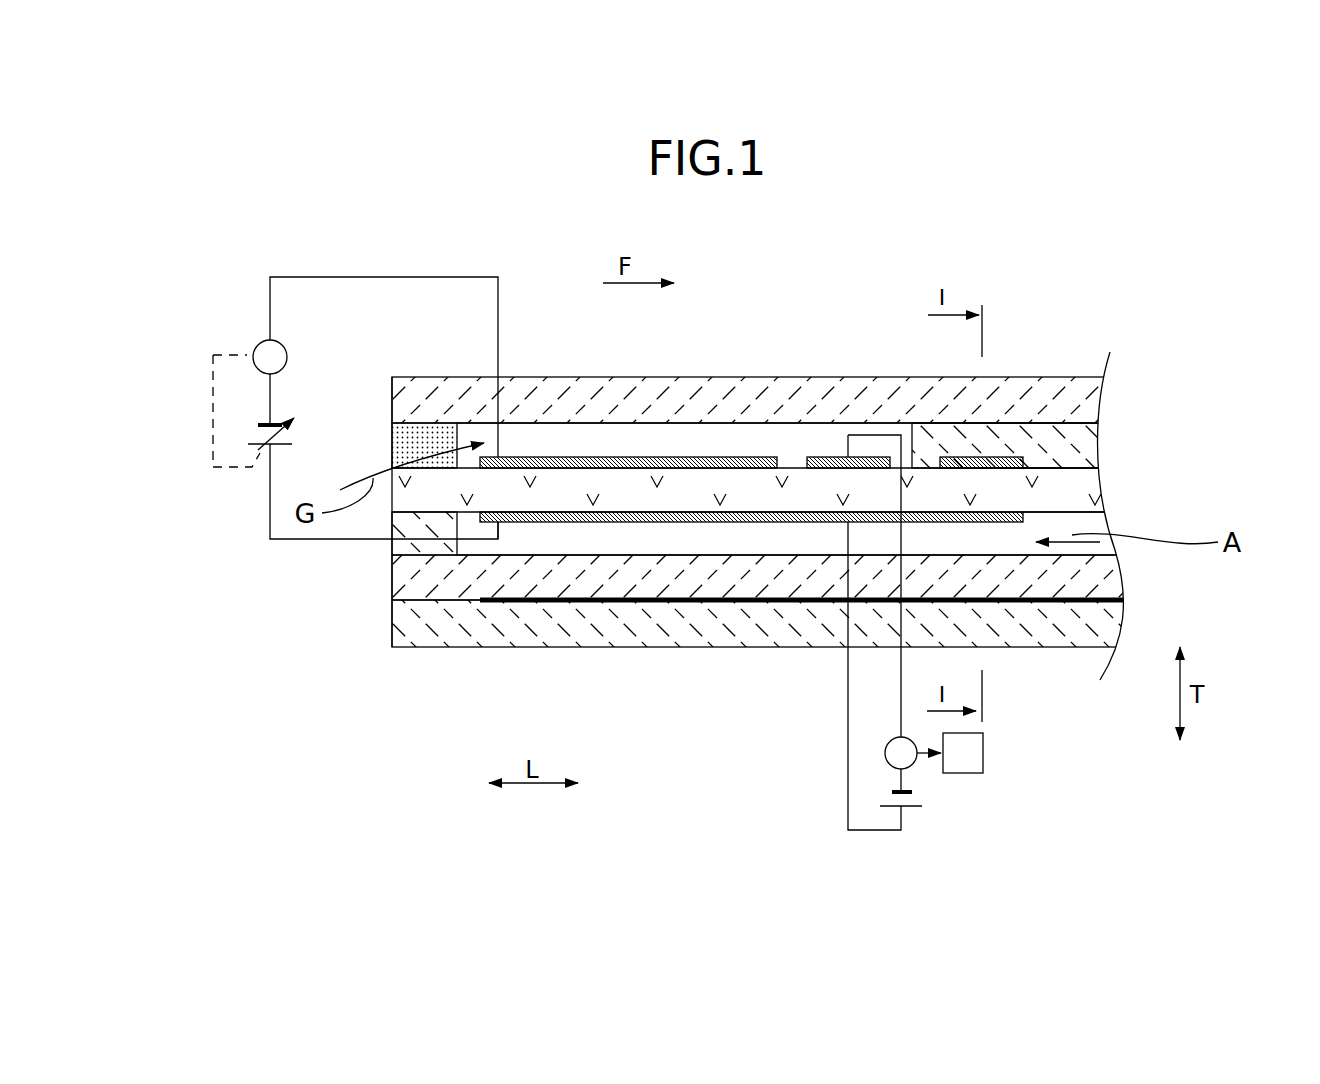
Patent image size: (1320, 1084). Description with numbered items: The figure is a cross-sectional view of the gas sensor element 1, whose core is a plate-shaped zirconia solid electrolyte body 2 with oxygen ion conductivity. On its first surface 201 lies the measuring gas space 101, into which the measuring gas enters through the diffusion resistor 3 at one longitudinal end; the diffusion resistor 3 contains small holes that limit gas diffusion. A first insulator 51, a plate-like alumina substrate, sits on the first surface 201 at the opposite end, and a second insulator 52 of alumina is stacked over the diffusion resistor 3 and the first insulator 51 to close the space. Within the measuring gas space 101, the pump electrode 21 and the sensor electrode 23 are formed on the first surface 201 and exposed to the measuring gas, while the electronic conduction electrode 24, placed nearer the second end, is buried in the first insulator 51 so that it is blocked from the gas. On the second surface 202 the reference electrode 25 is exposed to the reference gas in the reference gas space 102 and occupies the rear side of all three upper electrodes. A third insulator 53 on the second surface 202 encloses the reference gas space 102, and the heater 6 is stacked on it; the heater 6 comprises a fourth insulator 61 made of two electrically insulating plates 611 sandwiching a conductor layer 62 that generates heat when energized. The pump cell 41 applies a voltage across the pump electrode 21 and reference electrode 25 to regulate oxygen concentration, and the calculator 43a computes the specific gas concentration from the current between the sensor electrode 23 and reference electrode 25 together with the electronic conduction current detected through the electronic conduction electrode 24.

The gas sensor element 1 is at (1102, 328).
The solid electrolyte body 2 is at (798, 490).
The diffusion resistor 3 is at (417, 433).
The heater 6 is at (771, 710).
The pump electrode 21 is at (623, 457).
The sensor electrode 23 is at (835, 457).
The electronic conduction electrode 24 is at (992, 456).
The reference electrode 25 is at (752, 523).
The pump cell 41 is at (256, 298).
The calculator 43a is at (965, 773).
The first insulator 51 is at (1045, 440).
The second insulator 52 is at (540, 400).
The third insulator 53 is at (430, 548).
The fourth insulator 61 is at (771, 710).
The conductor layer 62 is at (693, 605).
The measuring gas space 101 is at (680, 443).
The reference gas space 102 is at (647, 535).
The first surface 201 is at (1077, 462).
The second surface 202 is at (1057, 512).
The electrically insulating plates 611 is at (1027, 630).